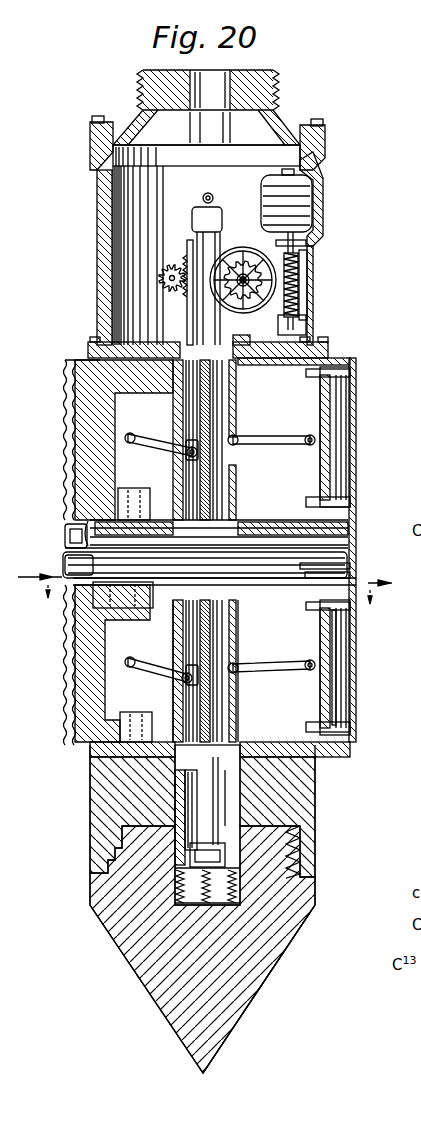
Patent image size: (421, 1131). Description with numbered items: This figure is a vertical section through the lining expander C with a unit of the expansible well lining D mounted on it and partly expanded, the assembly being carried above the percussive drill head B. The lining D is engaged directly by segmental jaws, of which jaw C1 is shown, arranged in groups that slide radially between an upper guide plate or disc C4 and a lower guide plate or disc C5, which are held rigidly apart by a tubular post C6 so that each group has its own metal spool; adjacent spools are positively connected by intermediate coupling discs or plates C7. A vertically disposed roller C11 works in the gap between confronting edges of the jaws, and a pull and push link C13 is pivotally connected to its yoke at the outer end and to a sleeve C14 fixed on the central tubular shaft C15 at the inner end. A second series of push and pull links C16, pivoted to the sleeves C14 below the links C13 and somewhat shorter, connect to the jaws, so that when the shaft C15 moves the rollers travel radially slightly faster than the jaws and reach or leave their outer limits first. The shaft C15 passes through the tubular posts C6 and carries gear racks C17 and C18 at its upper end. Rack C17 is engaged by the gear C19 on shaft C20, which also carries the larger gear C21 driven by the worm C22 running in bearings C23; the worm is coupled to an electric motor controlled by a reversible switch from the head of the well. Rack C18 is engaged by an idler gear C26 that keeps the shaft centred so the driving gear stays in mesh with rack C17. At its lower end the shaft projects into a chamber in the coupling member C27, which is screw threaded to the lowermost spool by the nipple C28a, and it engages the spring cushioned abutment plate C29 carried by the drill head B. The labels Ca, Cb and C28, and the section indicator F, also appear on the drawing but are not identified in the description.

The lining expander C is at (207, 603).
The section line F is at (209, 577).
The expansible well lining D is at (72, 615).
The percussive drill head B is at (268, 980).
The electric motor Ca is at (300, 198).
The worm housing Cb is at (318, 285).
The segmental jaw C1 is at (78, 690).
The upper guide plate or disc C4 is at (328, 356).
The lower guide plate or disc C5 is at (352, 478).
The tubular post C6 is at (234, 430).
The intermediate or coupling disc C7 is at (289, 437).
The vertically disposed roller C11 is at (340, 690).
The pull and push link C13 is at (293, 444).
The sleeve C14 is at (237, 462).
The central tubular shaft C15 is at (176, 446).
The push and pull link C16 is at (150, 447).
The gear rack C17 is at (243, 274).
The gear rack C18 is at (192, 247).
The gear C19 is at (268, 272).
The shaft C20 is at (300, 248).
The larger gear C21 is at (306, 325).
The worm C22 is at (307, 296).
The bearings C23 is at (306, 342).
The idler gear C26 is at (160, 283).
The coupling member C27 is at (232, 820).
The threaded plug C28 is at (300, 857).
The nipple C28a is at (176, 756).
The spring cushioned abutment plate C29 is at (182, 902).